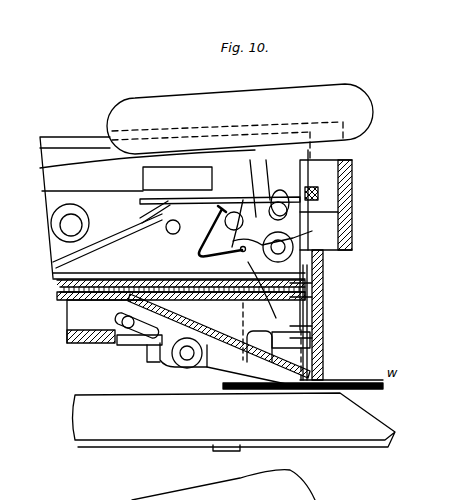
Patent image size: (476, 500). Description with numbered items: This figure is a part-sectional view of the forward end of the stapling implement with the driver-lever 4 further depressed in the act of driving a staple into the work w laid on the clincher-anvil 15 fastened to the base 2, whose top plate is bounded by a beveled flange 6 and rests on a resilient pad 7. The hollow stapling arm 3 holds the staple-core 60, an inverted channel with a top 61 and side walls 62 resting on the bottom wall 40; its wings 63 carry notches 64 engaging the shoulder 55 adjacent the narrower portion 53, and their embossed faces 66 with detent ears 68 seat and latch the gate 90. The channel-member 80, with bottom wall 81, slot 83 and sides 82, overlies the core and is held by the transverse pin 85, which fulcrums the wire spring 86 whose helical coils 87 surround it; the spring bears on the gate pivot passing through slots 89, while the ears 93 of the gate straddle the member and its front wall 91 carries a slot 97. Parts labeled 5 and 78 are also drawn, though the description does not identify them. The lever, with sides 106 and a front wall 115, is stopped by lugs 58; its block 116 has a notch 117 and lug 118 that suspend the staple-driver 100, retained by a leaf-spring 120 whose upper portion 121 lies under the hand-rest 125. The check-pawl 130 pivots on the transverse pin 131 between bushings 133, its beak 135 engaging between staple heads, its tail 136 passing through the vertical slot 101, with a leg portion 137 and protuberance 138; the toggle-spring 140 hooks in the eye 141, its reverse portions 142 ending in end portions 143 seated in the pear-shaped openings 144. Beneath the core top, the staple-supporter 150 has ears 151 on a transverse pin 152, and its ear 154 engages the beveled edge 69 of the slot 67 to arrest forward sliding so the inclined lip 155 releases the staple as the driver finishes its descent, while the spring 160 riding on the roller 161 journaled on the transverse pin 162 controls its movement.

The base 2 is at (234, 420).
The stapling arm 3 is at (90, 345).
The driver-lever 4 is at (62, 137).
The rack 5 is at (323, 372).
The beveled flange 6 is at (375, 412).
The resilient pad 7 is at (225, 480).
The clincher-anvil 15 is at (325, 392).
The bottom wall 40 is at (67, 342).
The narrower portion 53 is at (118, 345).
The shoulder 55 is at (150, 378).
The lugs 58 is at (157, 165).
The staple-core 60 is at (67, 302).
The top 61 is at (323, 297).
The side walls 62 is at (67, 320).
The wings 63 is at (160, 365).
The notches 64 is at (147, 355).
The projecting faces 66 is at (263, 390).
The slot 67 is at (103, 286).
The ears 68 is at (323, 340).
The beveled edge 69 is at (160, 280).
The rod 78 is at (171, 219).
The channel-member 80 is at (75, 191).
The bottom wall 81 is at (174, 283).
The sides 82 is at (45, 207).
The slot 83 is at (53, 278).
The transverse pin 85 is at (83, 219).
The wire spring 86 is at (55, 258).
The helical coils 87 is at (52, 229).
The slots 89 is at (279, 182).
The gate 90 is at (340, 384).
The front wall 91 is at (323, 324).
The ears 93 is at (252, 160).
The slot 97 is at (323, 283).
The staple-driver 100 is at (323, 355).
The vertical slot 101 is at (323, 312).
The sides 106 is at (45, 170).
The front wall 115 is at (352, 148).
The block 116 is at (345, 165).
The notch 117 is at (352, 182).
The lug 118 is at (318, 196).
The leaf-spring 120 is at (308, 160).
The upper portion 121 is at (208, 143).
The hand-rest 125 is at (240, 119).
The check-pawl 130 is at (279, 290).
The transverse pin 131 is at (345, 248).
The bushings 133 is at (340, 232).
The beak 135 is at (272, 341).
The tail 136 is at (340, 215).
The leg portion 137 is at (323, 265).
The protuberance 138 is at (352, 210).
The toggle-spring 140 is at (206, 229).
The eye 141 is at (240, 258).
The reverse portions 142 is at (214, 232).
The end portions 143 is at (220, 194).
The pear-shaped openings 144 is at (232, 211).
The staple-supporter 150 is at (253, 369).
The ears 151 is at (120, 317).
The transverse pin 152 is at (122, 325).
The ear 154 is at (127, 286).
The inclined lip 155 is at (295, 390).
The spring 160 is at (215, 378).
The roller 161 is at (219, 336).
The transverse pin 162 is at (185, 368).